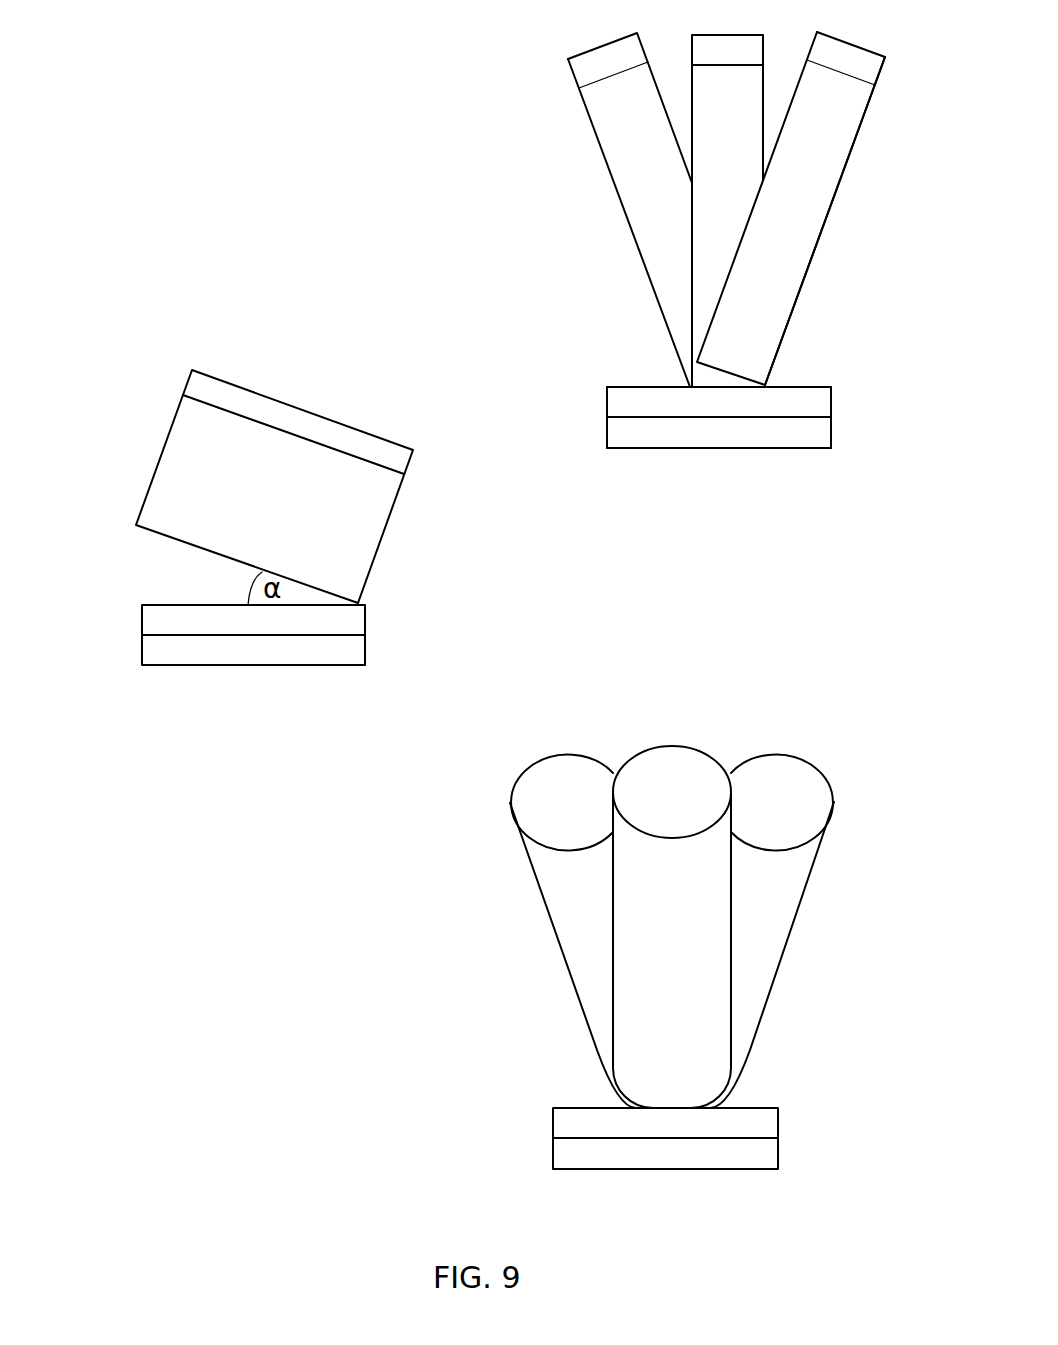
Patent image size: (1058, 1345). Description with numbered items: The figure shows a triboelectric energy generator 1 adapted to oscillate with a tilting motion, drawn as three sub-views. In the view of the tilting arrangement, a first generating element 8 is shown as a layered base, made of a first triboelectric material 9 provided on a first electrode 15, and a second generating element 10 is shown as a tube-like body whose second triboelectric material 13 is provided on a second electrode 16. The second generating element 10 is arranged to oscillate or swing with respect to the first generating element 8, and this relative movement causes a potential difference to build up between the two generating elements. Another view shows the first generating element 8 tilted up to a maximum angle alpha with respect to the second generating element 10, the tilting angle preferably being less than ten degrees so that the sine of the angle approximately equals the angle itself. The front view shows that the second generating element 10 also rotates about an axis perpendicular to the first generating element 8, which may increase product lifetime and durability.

The triboelectric energy generator 1 is at (536, 124).
The first generating element 8 is at (753, 489).
The first triboelectric material 9 is at (832, 401).
The second generating element 10 is at (556, 197).
The second triboelectric material 13 is at (835, 193).
The first electrode 15 is at (607, 430).
The second electrode 16 is at (878, 73).